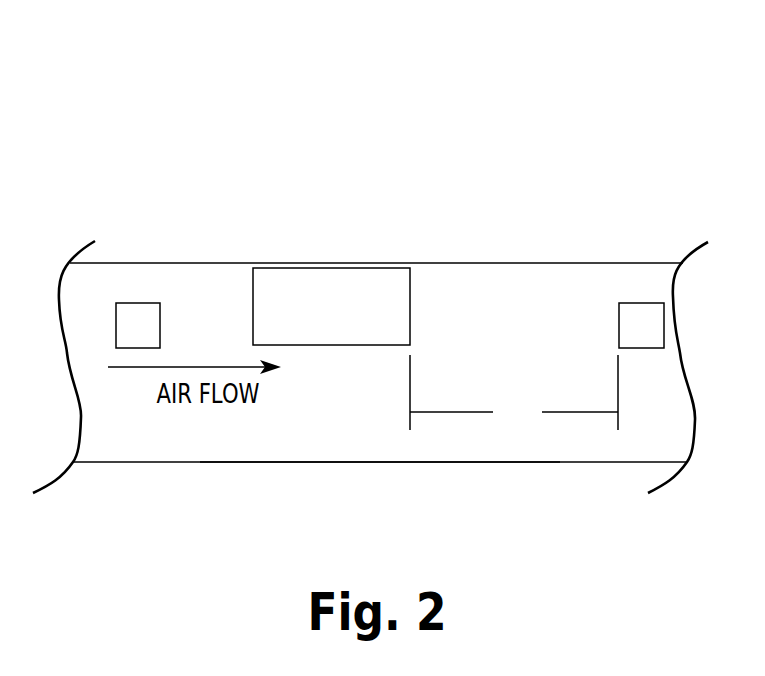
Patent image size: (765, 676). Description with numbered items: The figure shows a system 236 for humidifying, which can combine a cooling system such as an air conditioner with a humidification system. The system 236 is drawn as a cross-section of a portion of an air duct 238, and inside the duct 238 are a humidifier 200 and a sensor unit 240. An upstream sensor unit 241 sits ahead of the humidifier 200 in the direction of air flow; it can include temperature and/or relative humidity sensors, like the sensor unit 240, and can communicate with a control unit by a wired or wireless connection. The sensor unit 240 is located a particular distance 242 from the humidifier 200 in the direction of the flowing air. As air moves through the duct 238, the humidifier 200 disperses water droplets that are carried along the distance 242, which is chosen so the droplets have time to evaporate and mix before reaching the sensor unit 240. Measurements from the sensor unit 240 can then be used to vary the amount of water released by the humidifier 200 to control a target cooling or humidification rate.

The system for humidifying 236 is at (508, 96).
The air duct 238 is at (359, 462).
The humidifier 200 is at (358, 278).
The upstream sensor unit 241 is at (138, 313).
The sensor unit 240 is at (642, 312).
The distance 242 is at (514, 392).